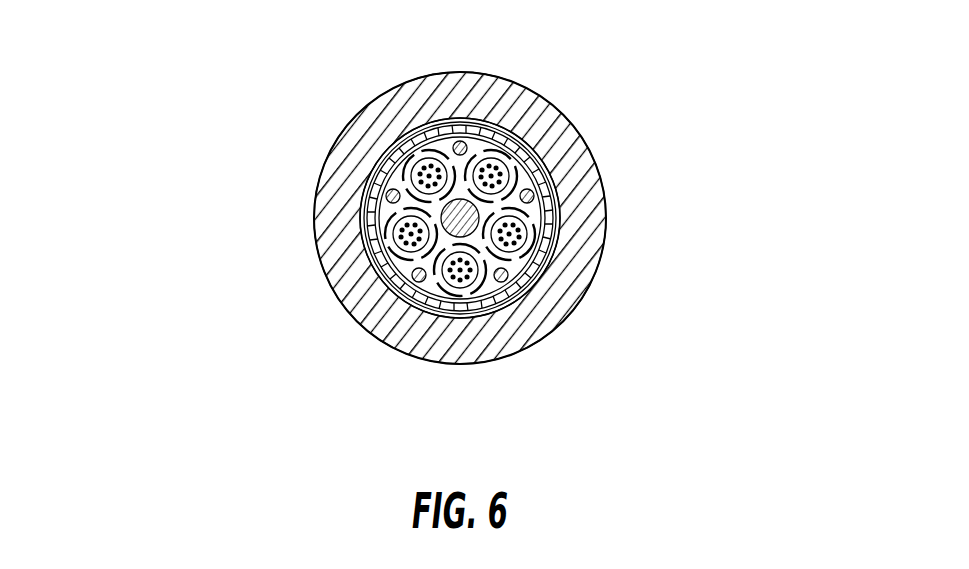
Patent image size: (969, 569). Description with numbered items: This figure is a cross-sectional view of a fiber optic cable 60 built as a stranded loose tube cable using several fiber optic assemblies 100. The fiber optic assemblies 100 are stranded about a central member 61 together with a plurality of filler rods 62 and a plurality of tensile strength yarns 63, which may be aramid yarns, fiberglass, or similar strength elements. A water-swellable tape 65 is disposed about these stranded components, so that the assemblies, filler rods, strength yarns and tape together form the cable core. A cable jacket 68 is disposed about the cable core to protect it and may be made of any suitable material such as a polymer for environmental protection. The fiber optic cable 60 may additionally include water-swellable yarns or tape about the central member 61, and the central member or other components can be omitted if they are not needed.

The fiber optic cable 60 is at (128, 107).
The central member 61 is at (548, 172).
The filler rods 62 is at (533, 210).
The tensile strength yarns 63 is at (463, 142).
The water-swellable tape 65 is at (407, 307).
The cable jacket 68 is at (316, 245).
The fiber optic assemblies 100 is at (462, 142).